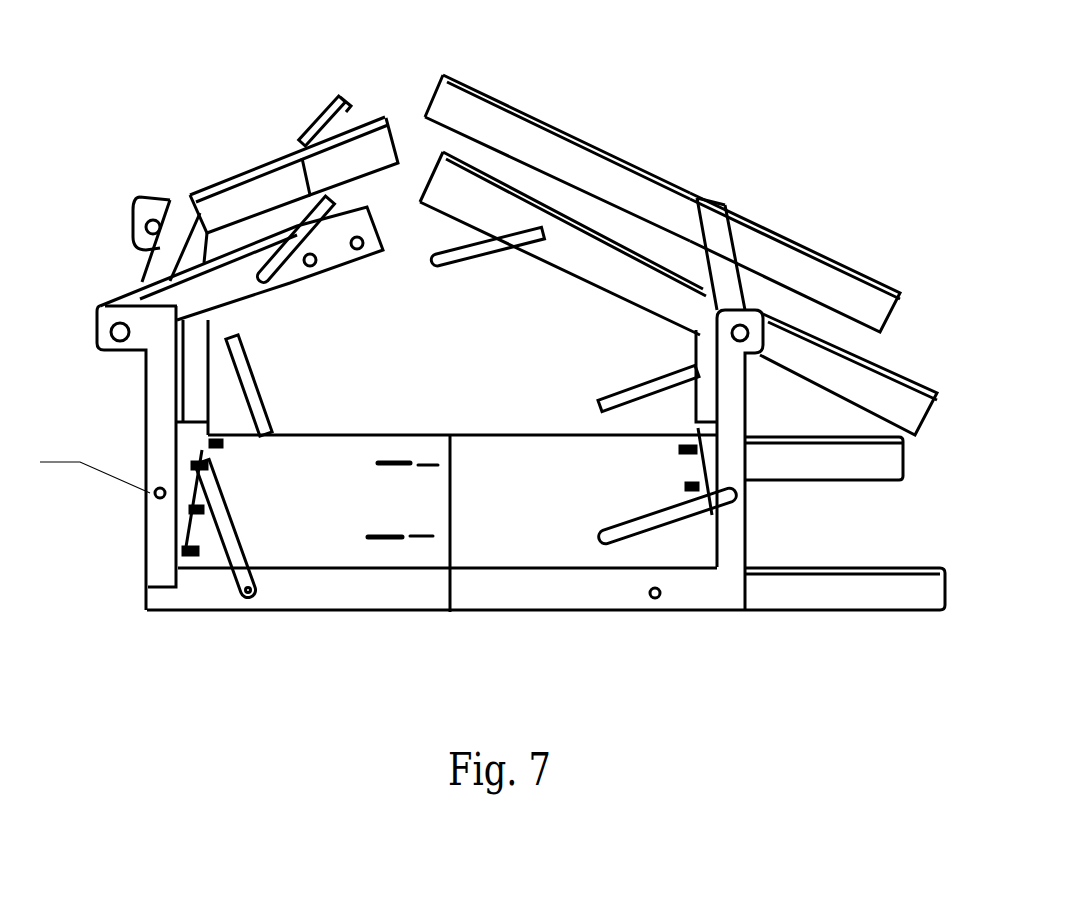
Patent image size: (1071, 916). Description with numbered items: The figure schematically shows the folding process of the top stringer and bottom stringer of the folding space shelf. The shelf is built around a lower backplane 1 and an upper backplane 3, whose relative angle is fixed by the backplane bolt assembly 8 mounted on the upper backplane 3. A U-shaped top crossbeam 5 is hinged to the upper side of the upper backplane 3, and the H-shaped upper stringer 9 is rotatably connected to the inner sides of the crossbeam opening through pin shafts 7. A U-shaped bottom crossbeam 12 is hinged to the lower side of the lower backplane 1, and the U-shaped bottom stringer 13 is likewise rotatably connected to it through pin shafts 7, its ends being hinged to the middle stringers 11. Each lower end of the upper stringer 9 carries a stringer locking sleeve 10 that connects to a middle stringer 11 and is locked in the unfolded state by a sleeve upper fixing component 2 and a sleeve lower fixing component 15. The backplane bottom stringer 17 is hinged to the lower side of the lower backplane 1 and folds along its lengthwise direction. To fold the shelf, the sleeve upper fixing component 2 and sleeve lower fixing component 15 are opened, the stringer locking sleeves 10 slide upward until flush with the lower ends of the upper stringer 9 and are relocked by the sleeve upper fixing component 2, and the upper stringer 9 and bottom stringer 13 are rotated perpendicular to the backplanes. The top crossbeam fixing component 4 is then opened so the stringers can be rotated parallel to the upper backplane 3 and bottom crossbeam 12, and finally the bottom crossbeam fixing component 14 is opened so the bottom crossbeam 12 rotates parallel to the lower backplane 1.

The lower backplane 1 is at (537, 527).
The sleeve upper fixing component 2 is at (310, 223).
The upper backplane 3 is at (258, 527).
The top crossbeam fixing component 4 is at (217, 523).
The top crossbeam 5 is at (153, 408).
The pin shaft 7 is at (740, 333).
The backplane bolt assembly 8 is at (393, 540).
The upper stringer 9 is at (237, 200).
The stringer locking sleeve 10 is at (353, 167).
The middle stringer 11 is at (626, 190).
The bottom crossbeam 12 is at (728, 442).
The bottom stringer 13 is at (848, 290).
The bottom crossbeam fixing component 14 is at (655, 525).
The sleeve lower fixing component 15 is at (517, 240).
The backplane bottom stringer 17 is at (860, 590).